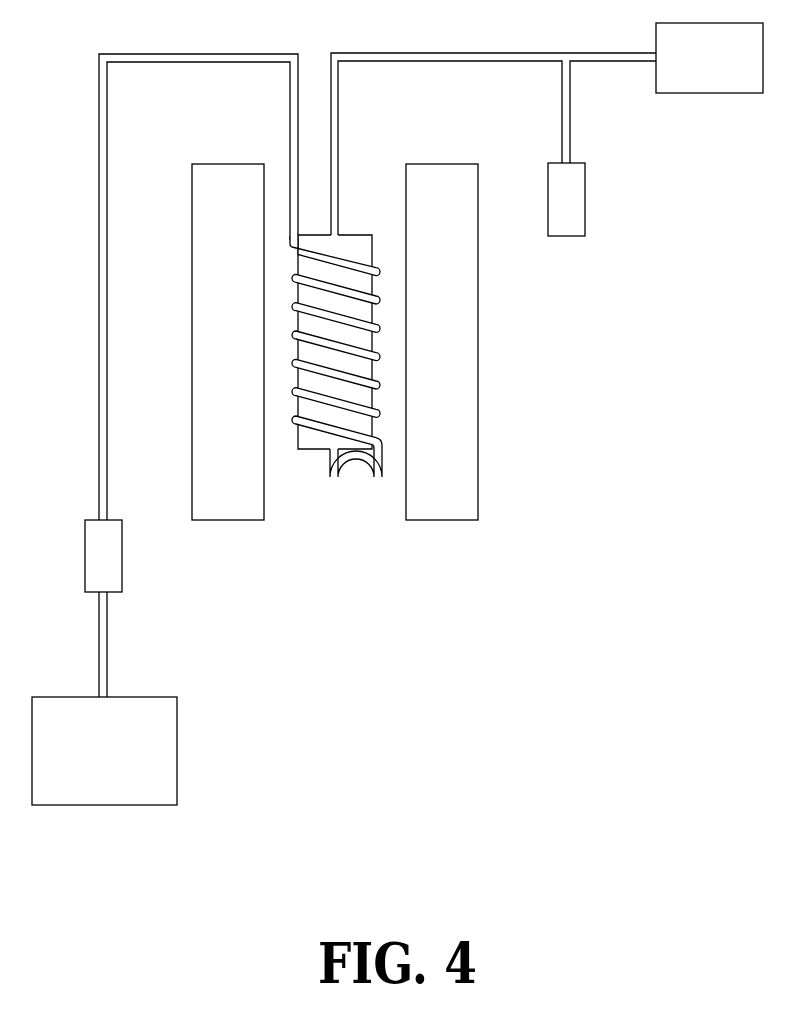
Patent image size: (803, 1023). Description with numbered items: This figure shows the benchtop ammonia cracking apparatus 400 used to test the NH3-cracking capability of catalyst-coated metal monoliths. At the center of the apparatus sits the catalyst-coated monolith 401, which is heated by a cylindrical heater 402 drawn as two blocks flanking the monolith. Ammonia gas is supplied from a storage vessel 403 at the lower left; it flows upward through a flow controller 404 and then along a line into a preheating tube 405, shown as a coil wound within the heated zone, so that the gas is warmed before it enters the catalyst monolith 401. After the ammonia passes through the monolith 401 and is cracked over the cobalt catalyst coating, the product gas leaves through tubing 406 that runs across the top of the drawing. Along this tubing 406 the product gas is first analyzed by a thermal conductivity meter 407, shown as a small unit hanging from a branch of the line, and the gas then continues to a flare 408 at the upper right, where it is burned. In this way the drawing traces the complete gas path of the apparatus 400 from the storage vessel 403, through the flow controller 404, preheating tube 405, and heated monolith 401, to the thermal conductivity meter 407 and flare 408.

The benchtop ammonia cracking apparatus 400 is at (397, 414).
The catalyst-coated monolith 401 is at (310, 460).
The cylindrical heater 402 is at (335, 342).
The storage vessel 403 is at (104, 751).
The flow controller 404 is at (128, 563).
The preheating tube 405 is at (345, 252).
The tubing 406 is at (493, 130).
The thermal conductivity meter 407 is at (592, 223).
The flare 408 is at (709, 58).